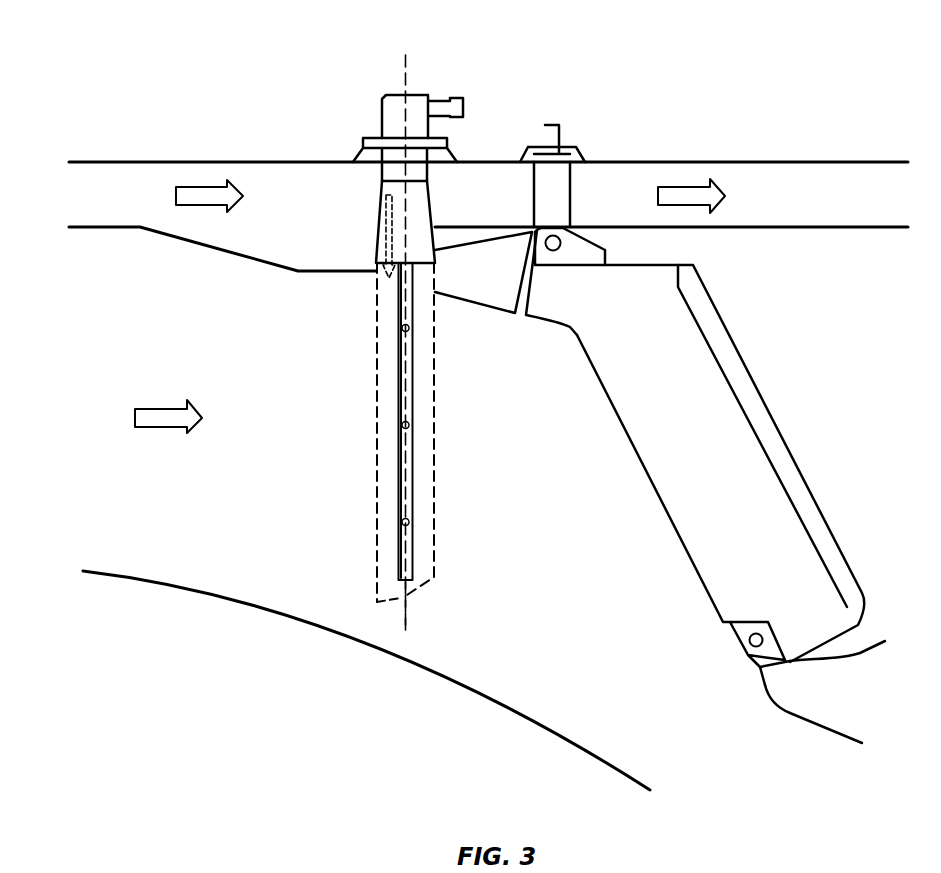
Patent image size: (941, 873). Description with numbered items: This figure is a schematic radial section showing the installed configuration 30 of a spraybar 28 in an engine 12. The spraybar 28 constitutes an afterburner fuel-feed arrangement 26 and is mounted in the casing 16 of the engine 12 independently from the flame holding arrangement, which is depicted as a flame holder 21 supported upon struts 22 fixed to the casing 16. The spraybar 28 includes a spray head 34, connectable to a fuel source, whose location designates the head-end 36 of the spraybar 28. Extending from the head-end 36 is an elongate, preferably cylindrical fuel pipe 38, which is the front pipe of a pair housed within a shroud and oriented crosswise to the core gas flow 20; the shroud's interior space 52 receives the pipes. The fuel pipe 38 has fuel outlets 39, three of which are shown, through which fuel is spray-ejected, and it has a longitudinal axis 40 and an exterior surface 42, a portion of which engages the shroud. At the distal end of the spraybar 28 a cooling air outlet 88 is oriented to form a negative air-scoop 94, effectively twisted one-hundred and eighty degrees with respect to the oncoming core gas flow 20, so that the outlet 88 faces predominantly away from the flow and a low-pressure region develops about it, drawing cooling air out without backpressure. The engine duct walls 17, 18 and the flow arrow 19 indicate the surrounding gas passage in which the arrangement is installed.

The engine 12 is at (512, 509).
The casing 16 is at (113, 229).
The exhaust pipe 17 is at (247, 162).
The pipe passage 18 is at (327, 178).
The exhaust flow arrow 19 is at (210, 193).
The core gas flow 20 is at (163, 417).
The flame holder 21 is at (830, 712).
The struts 22 is at (732, 462).
The afterburner fuel-feed arrangement 26 is at (392, 77).
The spraybar 28 is at (424, 466).
The installed configuration 30 is at (360, 323).
The spray head 34 is at (352, 123).
The head-end 36 is at (338, 292).
The fuel pipe 38 is at (408, 385).
The fuel outlets 39 is at (408, 330).
The longitudinal axis 40 is at (407, 610).
The exterior surface 42 is at (413, 447).
The interior space 52 is at (387, 438).
The cooling air outlet 88 is at (397, 605).
The negative air-scoop 94 is at (465, 622).